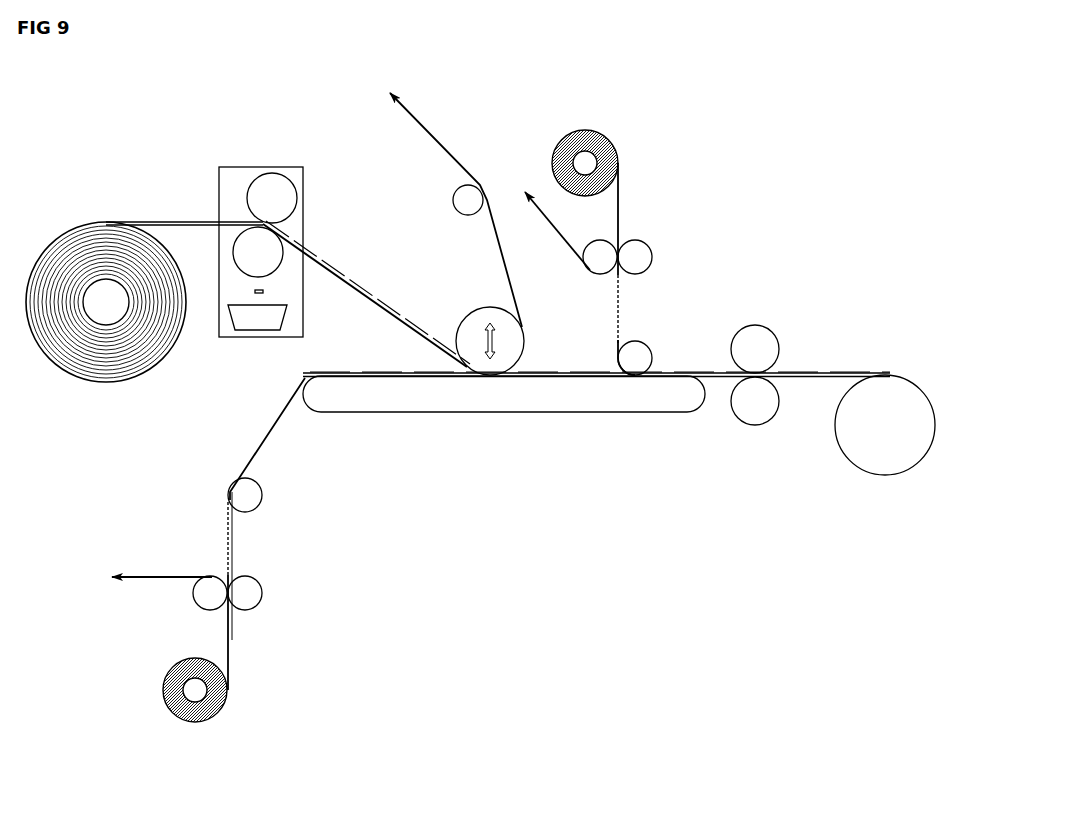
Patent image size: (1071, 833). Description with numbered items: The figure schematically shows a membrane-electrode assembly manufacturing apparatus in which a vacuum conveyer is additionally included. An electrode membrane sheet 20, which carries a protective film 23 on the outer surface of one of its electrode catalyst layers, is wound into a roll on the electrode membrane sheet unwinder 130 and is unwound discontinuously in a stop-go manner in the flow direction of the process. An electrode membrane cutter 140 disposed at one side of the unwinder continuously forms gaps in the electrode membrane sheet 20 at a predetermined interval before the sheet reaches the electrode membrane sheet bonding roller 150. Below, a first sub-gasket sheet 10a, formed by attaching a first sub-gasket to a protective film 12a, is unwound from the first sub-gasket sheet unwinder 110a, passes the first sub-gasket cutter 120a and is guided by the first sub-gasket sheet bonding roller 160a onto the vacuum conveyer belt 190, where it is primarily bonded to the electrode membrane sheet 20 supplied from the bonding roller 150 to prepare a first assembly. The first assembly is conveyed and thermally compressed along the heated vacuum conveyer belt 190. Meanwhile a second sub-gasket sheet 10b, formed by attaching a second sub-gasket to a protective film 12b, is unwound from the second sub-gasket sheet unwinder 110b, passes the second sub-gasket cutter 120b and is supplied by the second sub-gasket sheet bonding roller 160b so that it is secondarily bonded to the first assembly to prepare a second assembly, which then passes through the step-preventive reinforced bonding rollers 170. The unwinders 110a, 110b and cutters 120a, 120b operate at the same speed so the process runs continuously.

The electrode membrane sheet 20 is at (350, 280).
The protective film 23 is at (430, 130).
The electrode membrane sheet unwinder 130 is at (104, 385).
The electrode membrane cutter 140 is at (260, 167).
The electrode membrane sheet bonding roller 150 is at (475, 317).
The first sub-gasket sheet unwinder 110a is at (163, 685).
The second sub-gasket sheet unwinder 110b is at (607, 138).
The first sub-gasket sheet 10a is at (230, 523).
The second sub-gasket sheet 10b is at (615, 332).
The protective film 12a is at (163, 573).
The protective film 12b is at (557, 243).
The first sub-gasket cutter 120a is at (253, 598).
The second sub-gasket cutter 120b is at (643, 260).
The first sub-gasket sheet bonding roller 160a is at (260, 493).
The second sub-gasket sheet bonding roller 160b is at (640, 350).
The step-preventive reinforced bonding rollers 170 is at (752, 420).
The support plate 190 is at (498, 402).